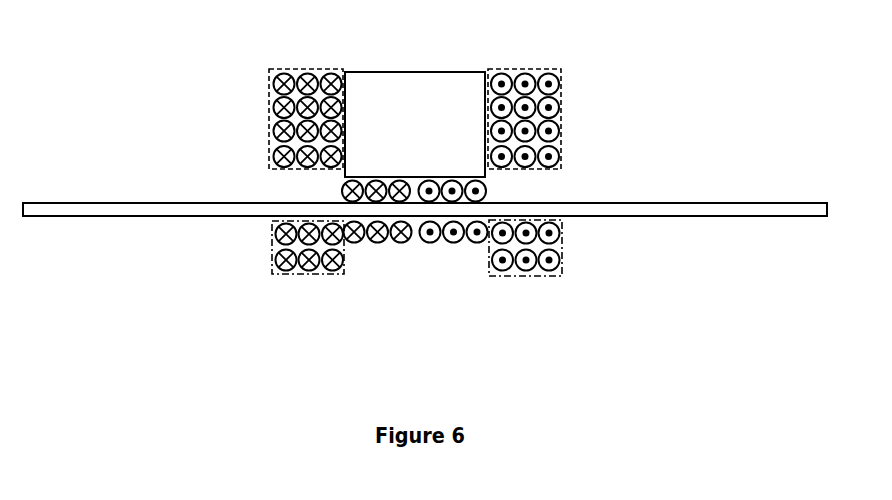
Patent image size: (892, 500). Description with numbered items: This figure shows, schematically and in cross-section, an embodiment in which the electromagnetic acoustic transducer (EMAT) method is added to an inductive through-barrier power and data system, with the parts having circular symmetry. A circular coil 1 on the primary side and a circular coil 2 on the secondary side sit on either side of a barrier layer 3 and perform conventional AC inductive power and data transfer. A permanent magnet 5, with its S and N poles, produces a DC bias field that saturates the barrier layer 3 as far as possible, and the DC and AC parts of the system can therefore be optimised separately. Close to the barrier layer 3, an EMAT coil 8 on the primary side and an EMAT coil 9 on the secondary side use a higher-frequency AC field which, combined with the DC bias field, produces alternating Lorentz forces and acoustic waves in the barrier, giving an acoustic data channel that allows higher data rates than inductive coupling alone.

The circular coil 1 is at (269, 118).
The circular coil 2 is at (272, 247).
The barrier layer 3 is at (685, 219).
The permanent magnet 5 is at (422, 72).
The EMAT coil 8 is at (487, 187).
The EMAT coil 9 is at (453, 240).